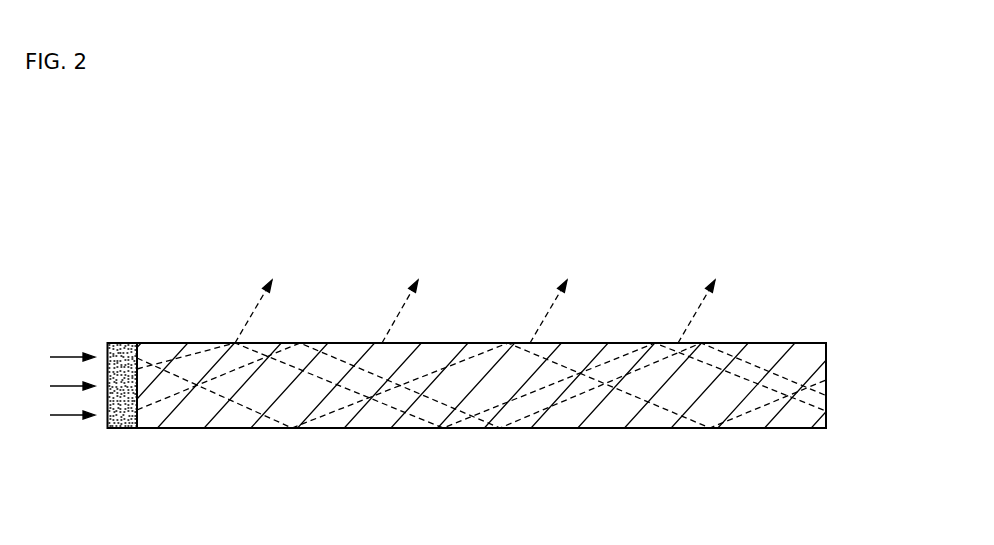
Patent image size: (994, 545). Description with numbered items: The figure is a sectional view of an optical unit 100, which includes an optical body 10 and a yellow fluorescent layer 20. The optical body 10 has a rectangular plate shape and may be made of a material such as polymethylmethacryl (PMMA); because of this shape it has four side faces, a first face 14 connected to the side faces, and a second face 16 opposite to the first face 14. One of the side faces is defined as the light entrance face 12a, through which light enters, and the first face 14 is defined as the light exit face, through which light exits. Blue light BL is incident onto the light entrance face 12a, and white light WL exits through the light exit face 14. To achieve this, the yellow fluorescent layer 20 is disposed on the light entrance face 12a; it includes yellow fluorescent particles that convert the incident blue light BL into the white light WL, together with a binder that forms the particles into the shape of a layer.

The optical unit 100 is at (435, 325).
The optical body 10 is at (803, 328).
The light entrance face 12a is at (139, 366).
The first face 14 is at (596, 342).
The second face 16 is at (467, 430).
The yellow fluorescent layer 20 is at (122, 429).
The blue light BL is at (63, 416).
The white light WL is at (396, 317).